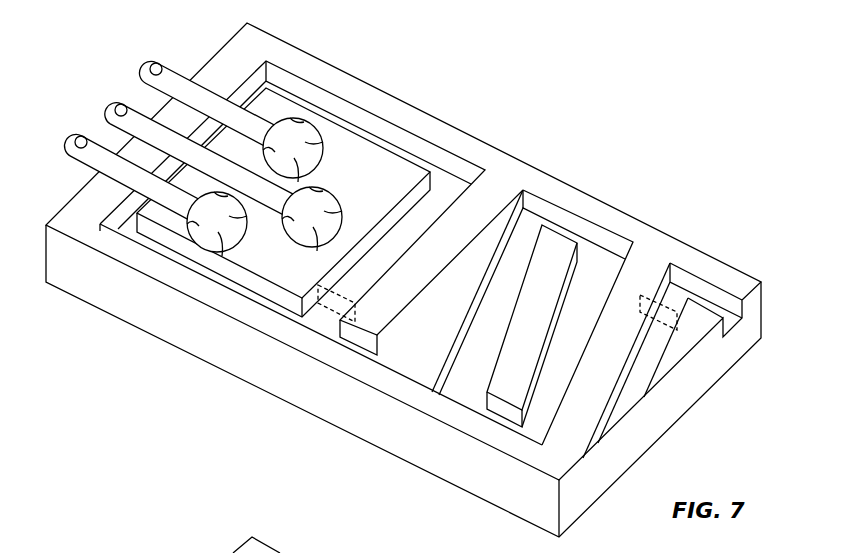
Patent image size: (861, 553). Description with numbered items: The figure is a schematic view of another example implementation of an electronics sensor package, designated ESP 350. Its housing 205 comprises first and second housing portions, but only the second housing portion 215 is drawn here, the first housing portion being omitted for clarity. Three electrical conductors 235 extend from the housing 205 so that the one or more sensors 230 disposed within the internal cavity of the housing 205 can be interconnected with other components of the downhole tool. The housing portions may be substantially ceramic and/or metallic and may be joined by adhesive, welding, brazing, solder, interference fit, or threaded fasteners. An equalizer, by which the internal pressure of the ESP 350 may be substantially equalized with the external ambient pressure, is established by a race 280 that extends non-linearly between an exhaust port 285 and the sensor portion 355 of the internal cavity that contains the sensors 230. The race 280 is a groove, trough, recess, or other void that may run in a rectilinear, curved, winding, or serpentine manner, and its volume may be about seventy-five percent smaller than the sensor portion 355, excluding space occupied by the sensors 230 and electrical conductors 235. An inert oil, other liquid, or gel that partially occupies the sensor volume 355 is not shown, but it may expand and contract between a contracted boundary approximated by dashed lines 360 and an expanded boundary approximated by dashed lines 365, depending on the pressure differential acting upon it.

The housing 205 is at (213, 546).
The second housing portion 215 is at (140, 312).
The sensor 230 is at (398, 190).
The electrical conductors 235 is at (135, 117).
The race 280 is at (592, 257).
The exhaust port 285 is at (729, 322).
The ESP 350 is at (527, 50).
The sensor portion of the internal cavity 355 is at (440, 177).
The dashed lines approximating contracted boundary 360 is at (332, 312).
The dashed lines approximating expanded boundary 365 is at (655, 303).